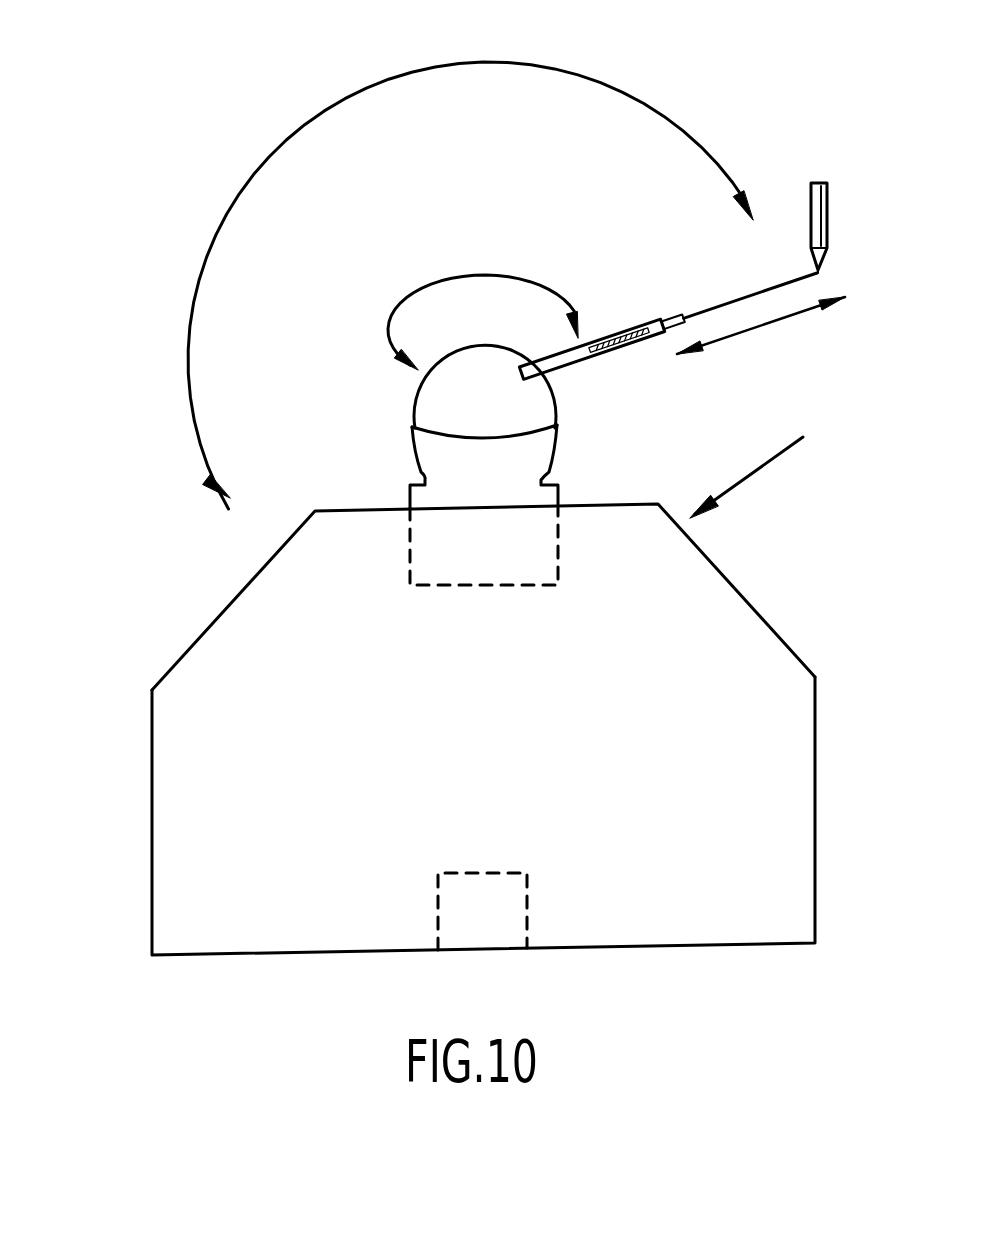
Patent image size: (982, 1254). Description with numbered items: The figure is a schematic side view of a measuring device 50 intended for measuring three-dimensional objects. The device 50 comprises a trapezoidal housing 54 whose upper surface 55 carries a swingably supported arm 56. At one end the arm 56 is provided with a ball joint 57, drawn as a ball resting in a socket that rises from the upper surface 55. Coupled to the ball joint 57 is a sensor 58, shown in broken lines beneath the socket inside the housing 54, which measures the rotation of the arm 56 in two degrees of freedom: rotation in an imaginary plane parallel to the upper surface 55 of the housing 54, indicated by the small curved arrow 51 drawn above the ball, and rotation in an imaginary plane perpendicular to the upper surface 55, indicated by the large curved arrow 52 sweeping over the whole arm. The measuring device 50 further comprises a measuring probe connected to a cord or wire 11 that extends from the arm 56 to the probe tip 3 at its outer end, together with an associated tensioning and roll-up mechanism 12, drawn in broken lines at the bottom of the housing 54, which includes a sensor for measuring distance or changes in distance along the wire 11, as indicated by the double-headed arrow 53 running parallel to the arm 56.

The pipette tip 3 is at (828, 200).
The wire 11 is at (745, 298).
The tensioning and roll-up mechanism 12 is at (474, 932).
The measuring device 50 is at (761, 456).
The curved arrow 51 is at (462, 275).
The curved arrow 52 is at (358, 88).
The arrow 53 is at (775, 322).
The trapezoidal housing 54 is at (180, 786).
The upper surface 55 is at (612, 502).
The arm 56 is at (592, 351).
The ball joint 57 is at (452, 398).
The sensor 58 is at (422, 548).